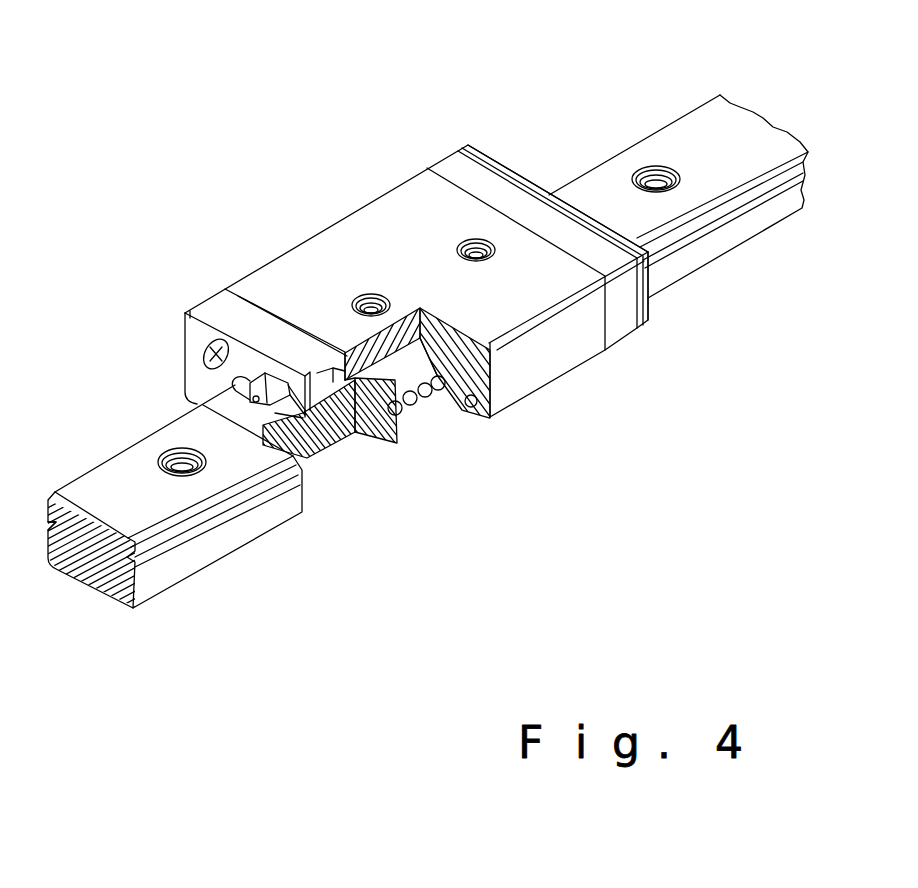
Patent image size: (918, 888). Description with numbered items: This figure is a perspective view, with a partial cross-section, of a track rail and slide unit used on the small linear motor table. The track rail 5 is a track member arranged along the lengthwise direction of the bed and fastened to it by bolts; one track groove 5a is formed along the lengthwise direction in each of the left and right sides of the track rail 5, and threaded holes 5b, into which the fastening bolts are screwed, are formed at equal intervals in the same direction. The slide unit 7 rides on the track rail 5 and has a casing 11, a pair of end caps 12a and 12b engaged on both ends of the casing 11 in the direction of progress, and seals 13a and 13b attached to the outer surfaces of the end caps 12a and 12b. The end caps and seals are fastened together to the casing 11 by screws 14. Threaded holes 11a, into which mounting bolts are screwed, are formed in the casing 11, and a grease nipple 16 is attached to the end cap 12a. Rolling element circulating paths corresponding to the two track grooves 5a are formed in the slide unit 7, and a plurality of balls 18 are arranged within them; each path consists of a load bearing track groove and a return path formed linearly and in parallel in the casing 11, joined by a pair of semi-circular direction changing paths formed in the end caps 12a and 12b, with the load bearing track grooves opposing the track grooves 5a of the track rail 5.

The track rail 5 is at (404, 368).
The track groove 5a is at (55, 520).
The threaded hole 5b is at (181, 455).
The slide unit 7 is at (350, 301).
The casing 11 is at (298, 263).
The threaded hole 11a is at (364, 302).
The end cap 12a is at (218, 302).
The end cap 12b is at (497, 193).
The seal 13a is at (190, 325).
The seal 13b is at (538, 190).
The screw 14 is at (205, 350).
The grease nipple 16 is at (256, 404).
The ball 18 is at (439, 391).